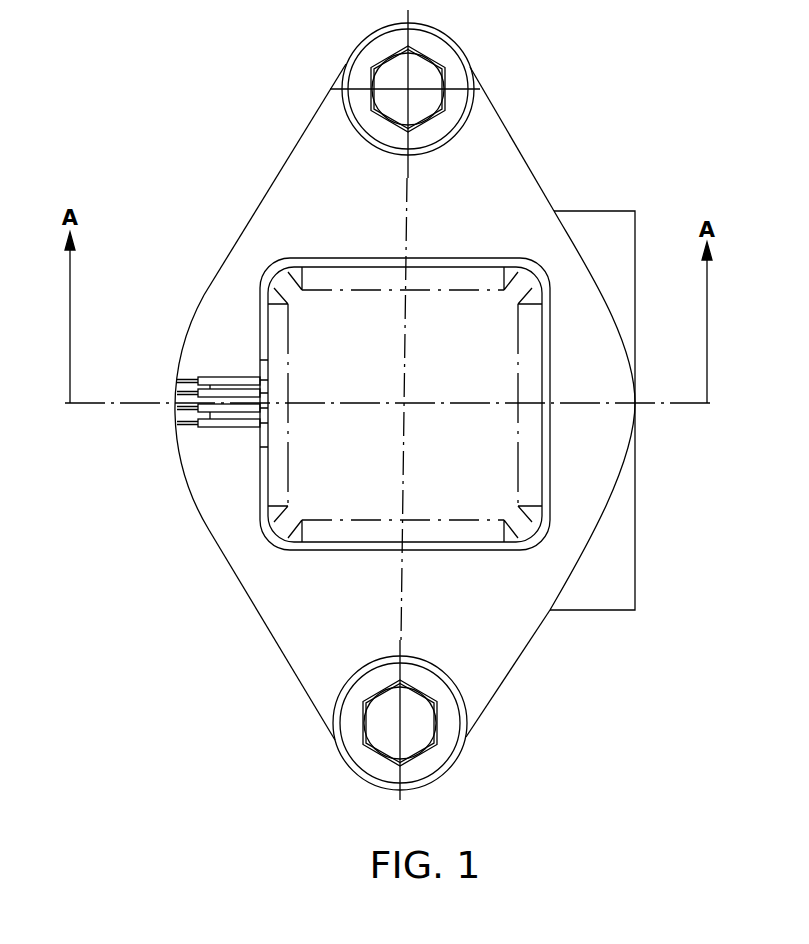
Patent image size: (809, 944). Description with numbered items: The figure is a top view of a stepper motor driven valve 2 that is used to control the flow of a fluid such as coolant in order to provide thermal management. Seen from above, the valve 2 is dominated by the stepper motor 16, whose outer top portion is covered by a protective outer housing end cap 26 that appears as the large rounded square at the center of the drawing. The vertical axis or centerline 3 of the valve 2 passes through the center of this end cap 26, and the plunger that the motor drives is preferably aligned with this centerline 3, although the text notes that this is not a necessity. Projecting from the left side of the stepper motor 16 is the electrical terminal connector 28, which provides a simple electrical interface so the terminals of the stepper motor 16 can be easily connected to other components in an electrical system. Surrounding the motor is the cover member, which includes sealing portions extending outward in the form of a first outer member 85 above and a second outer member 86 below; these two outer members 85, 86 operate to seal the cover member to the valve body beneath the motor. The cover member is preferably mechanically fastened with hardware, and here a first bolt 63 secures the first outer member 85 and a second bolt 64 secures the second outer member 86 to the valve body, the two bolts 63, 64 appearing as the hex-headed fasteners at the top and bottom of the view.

The valve 2 is at (630, 191).
The vertical axis or centerline 3 is at (400, 404).
The stepper motor 16 is at (343, 503).
The protective outer housing end cap 26 is at (425, 362).
The electrical terminal connector 28 is at (232, 412).
The first bolt 63 is at (380, 73).
The second bolt 64 is at (330, 723).
The first outer member 85 is at (338, 209).
The second outer member 86 is at (343, 610).